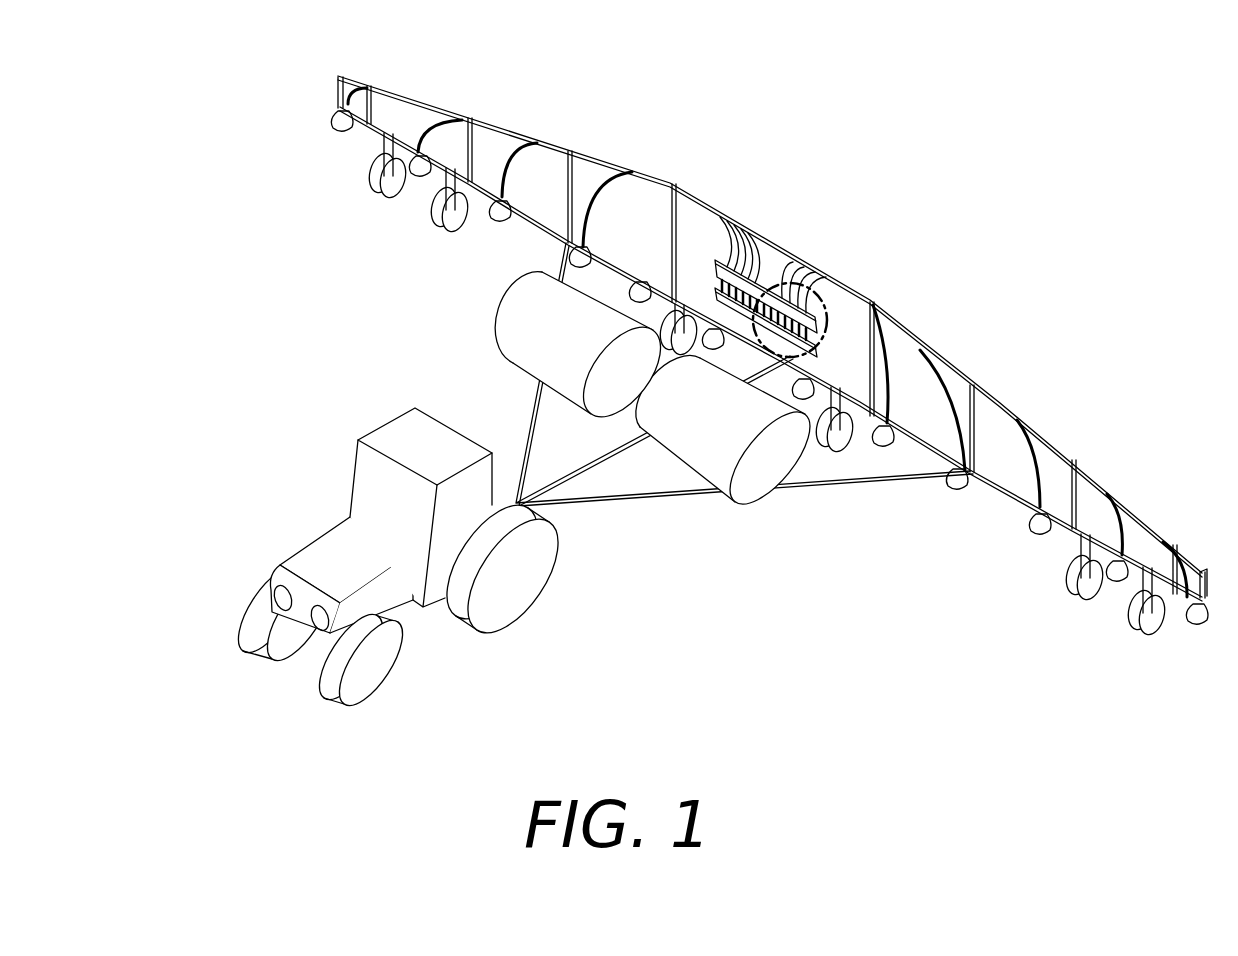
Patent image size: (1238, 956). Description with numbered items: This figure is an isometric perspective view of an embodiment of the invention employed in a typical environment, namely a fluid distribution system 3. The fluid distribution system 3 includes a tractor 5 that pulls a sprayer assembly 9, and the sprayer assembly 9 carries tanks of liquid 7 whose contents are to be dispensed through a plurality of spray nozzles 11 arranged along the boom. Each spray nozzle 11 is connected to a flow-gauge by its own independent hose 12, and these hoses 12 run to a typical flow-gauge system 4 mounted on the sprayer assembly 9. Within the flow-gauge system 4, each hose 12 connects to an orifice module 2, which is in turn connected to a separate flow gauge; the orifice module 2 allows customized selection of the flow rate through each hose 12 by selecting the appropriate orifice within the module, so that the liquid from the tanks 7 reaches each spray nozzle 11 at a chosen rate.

The fluid distribution system 3 is at (112, 85).
The sprayer assembly 9 is at (690, 152).
The flow-gauge system 4 is at (803, 232).
The hose 12 is at (957, 478).
The orifice module 2 is at (872, 333).
The tractor 5 is at (387, 415).
The tanks of liquid 7 is at (680, 387).
The spray nozzles 11 is at (1087, 597).